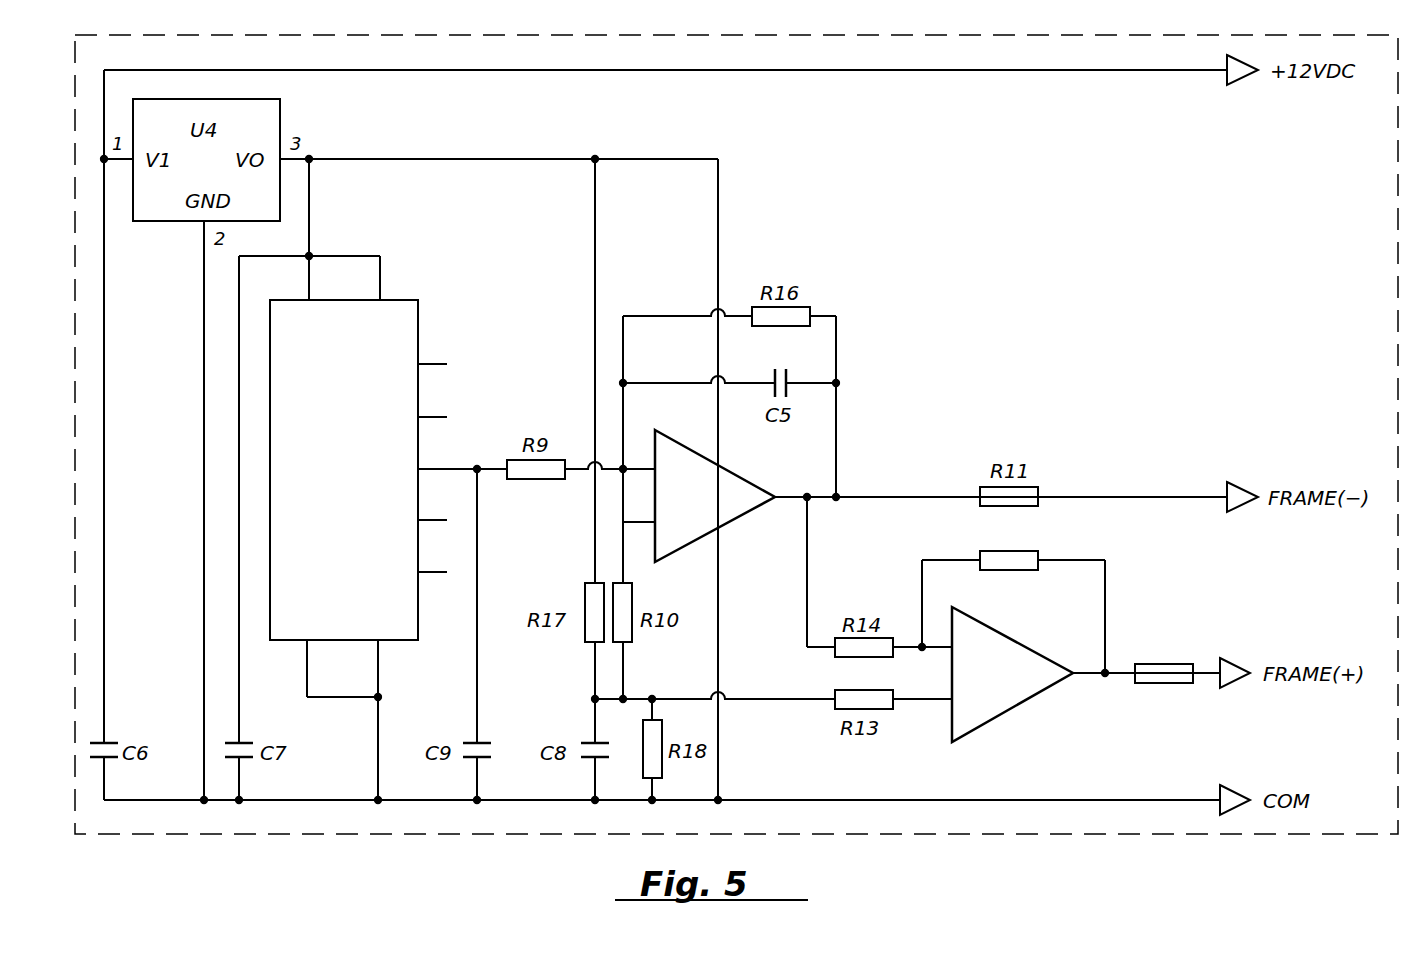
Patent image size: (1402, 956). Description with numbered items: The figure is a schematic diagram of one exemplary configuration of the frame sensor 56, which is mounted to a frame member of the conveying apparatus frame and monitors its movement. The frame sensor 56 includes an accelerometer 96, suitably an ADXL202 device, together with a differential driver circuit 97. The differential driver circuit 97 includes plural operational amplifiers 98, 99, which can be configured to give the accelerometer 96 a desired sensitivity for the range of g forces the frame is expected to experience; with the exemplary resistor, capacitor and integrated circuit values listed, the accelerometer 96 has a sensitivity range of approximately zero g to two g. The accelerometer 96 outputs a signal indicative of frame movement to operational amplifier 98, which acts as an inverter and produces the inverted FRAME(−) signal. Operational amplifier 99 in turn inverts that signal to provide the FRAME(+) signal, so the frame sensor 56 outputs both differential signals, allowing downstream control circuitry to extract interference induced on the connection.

The frame sensor 56 is at (340, 836).
The accelerometer 96 is at (418, 316).
The differential driver circuit 97 is at (985, 364).
The operational amplifier 98 is at (759, 562).
The operational amplifier 99 is at (1147, 584).